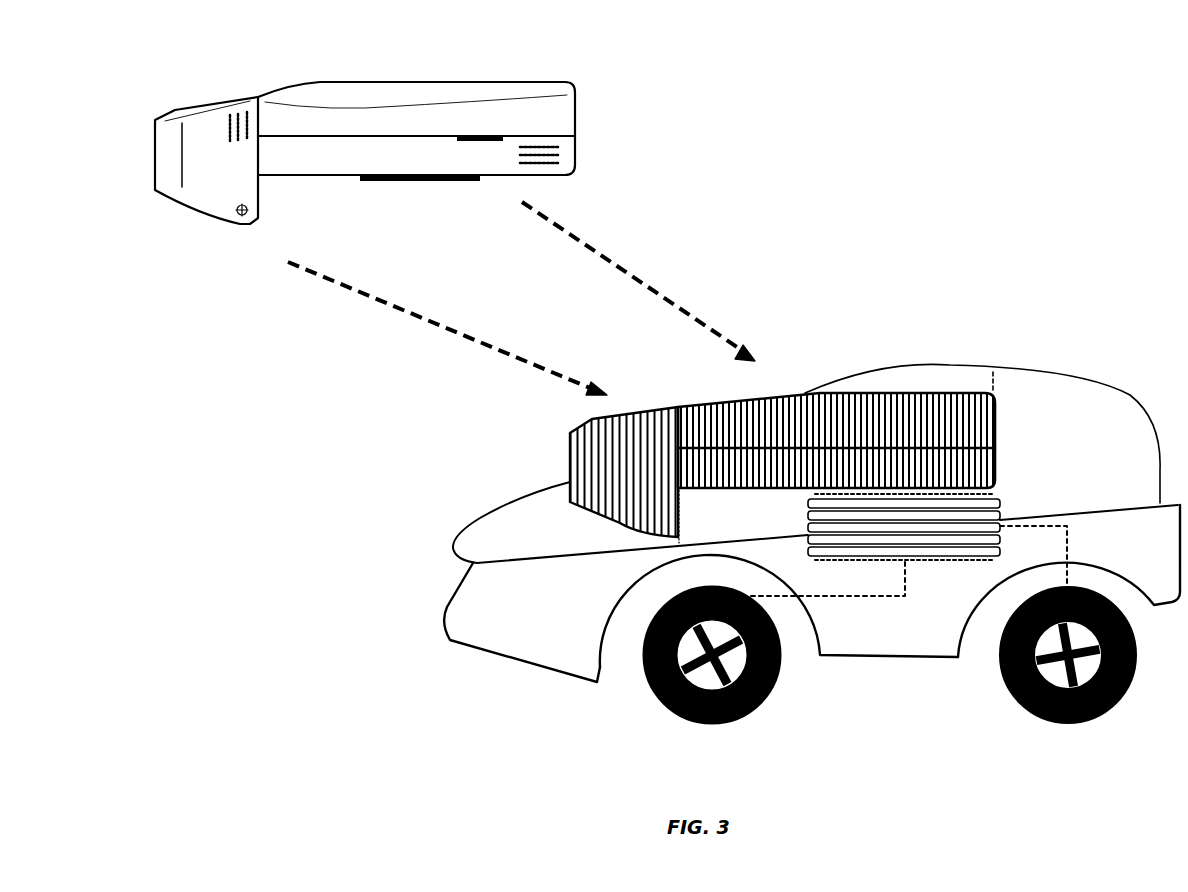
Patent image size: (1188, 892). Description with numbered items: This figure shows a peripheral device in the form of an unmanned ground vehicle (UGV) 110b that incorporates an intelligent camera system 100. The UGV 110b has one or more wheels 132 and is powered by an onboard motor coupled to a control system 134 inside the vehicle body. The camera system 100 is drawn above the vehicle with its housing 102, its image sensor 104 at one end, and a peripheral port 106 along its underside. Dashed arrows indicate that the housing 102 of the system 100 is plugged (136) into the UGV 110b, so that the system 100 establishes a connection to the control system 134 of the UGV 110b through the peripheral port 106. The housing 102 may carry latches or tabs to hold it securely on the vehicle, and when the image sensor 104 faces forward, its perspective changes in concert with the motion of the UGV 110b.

The intelligent camera system 100 is at (603, 77).
The housing 102 is at (513, 81).
The image sensor 104 is at (219, 214).
The peripheral port 106 is at (420, 182).
The unmanned ground vehicle (UGV) 110b is at (1164, 93).
The wheels 132 is at (764, 702).
The control system 134 is at (922, 563).
The plugging 136 is at (645, 290).